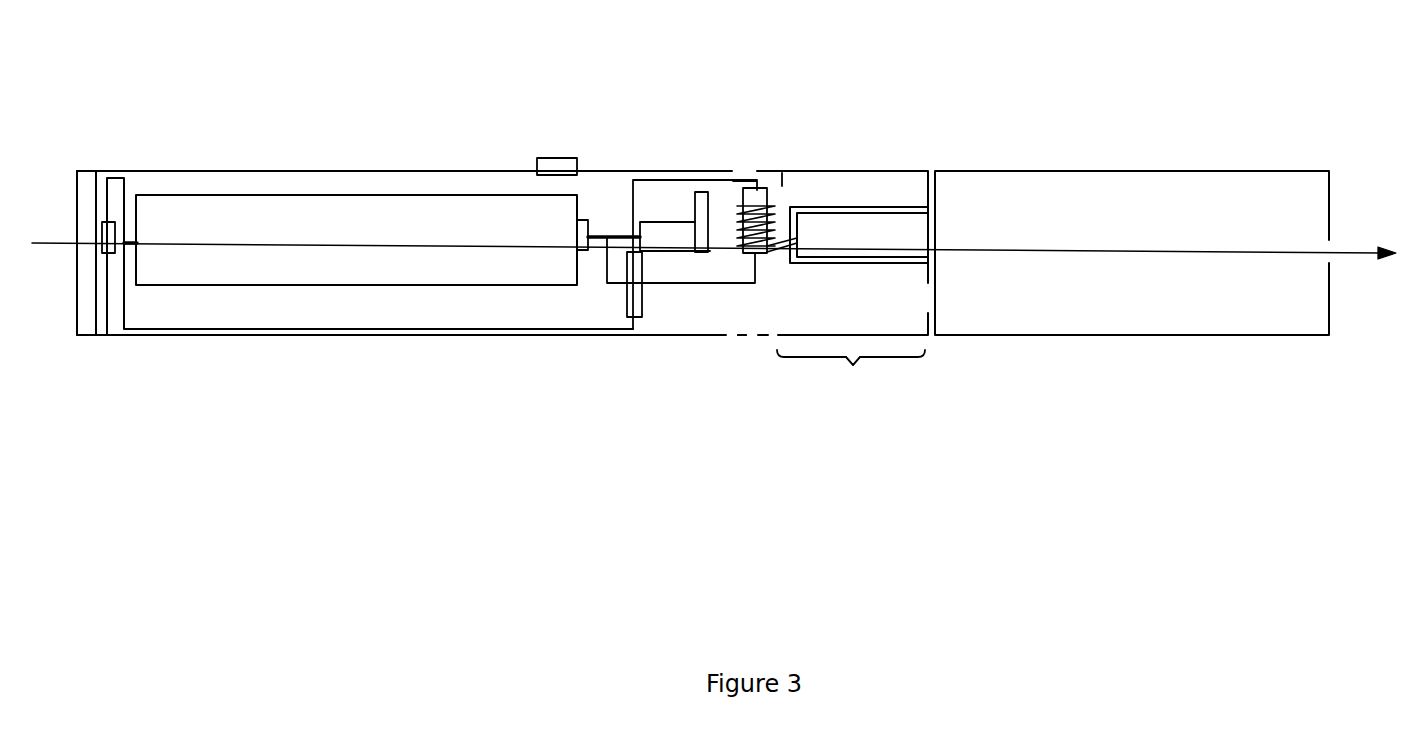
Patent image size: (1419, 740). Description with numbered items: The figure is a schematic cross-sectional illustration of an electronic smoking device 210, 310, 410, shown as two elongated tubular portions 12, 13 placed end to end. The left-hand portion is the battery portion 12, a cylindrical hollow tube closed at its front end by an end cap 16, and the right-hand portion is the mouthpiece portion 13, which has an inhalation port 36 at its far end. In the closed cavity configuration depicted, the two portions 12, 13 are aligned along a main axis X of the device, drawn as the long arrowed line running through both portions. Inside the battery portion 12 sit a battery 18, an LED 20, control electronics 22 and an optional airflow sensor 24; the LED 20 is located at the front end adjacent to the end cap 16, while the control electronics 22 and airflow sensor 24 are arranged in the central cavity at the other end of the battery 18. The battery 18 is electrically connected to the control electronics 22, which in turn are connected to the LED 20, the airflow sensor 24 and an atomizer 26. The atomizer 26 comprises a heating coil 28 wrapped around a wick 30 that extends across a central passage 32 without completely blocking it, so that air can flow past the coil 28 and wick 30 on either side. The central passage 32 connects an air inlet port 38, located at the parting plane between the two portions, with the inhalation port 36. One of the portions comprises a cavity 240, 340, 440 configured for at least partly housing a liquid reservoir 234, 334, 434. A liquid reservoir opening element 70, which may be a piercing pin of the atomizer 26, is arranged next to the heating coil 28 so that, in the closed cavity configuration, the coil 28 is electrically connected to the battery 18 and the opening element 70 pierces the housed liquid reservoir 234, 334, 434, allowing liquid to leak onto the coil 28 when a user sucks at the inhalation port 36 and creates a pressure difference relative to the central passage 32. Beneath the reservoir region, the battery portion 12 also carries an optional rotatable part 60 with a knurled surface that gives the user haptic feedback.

The electronic smoking device 210 is at (276, 66).
The electronic smoking device 310 is at (276, 66).
The electronic smoking device 410 is at (388, 95).
The battery portion 12 is at (917, 158).
The mouthpiece portion 13 is at (1330, 158).
The end cap 16 is at (83, 327).
The battery 18 is at (288, 265).
The LED 20 is at (560, 158).
The control electronics 22 is at (632, 298).
The airflow sensor 24 is at (702, 242).
The atomizer 26 is at (757, 176).
The heating coil 28 is at (782, 178).
The wick 30 is at (758, 253).
The central passage 32 is at (907, 317).
The inhalation port 36 is at (1328, 248).
The air inlet port 38 is at (733, 167).
The rotatable part 60 is at (833, 363).
The liquid reservoir opening element 70 is at (780, 240).
The liquid reservoir 234 is at (866, 374).
The liquid reservoir 334 is at (866, 374).
The liquid reservoir 434 is at (866, 374).
The cavity 240 is at (922, 164).
The cavity 340 is at (922, 164).
The cavity 440 is at (895, 207).